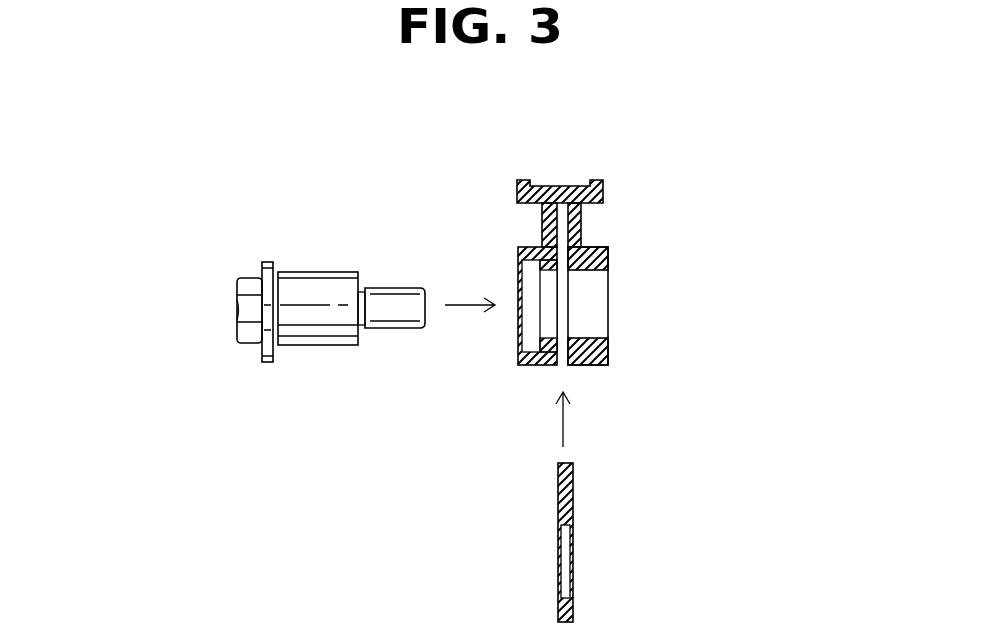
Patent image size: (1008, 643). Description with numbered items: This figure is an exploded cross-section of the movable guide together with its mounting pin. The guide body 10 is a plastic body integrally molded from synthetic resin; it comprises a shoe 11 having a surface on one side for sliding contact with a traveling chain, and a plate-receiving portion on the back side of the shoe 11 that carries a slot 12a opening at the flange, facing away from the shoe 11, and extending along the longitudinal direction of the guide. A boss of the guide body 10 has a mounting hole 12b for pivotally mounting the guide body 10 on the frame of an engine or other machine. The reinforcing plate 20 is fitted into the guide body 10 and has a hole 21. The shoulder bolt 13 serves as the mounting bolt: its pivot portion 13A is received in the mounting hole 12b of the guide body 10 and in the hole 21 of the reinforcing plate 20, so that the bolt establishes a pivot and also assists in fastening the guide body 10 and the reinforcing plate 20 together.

The guide body 10 is at (617, 244).
The shoe 11 is at (603, 192).
The slot 12a is at (605, 260).
The mounting hole 12b is at (590, 337).
The shoulder bolt 13 is at (331, 310).
The pivot portion 13A is at (317, 288).
The reinforcing plate 20 is at (620, 542).
The hole 21 is at (573, 538).